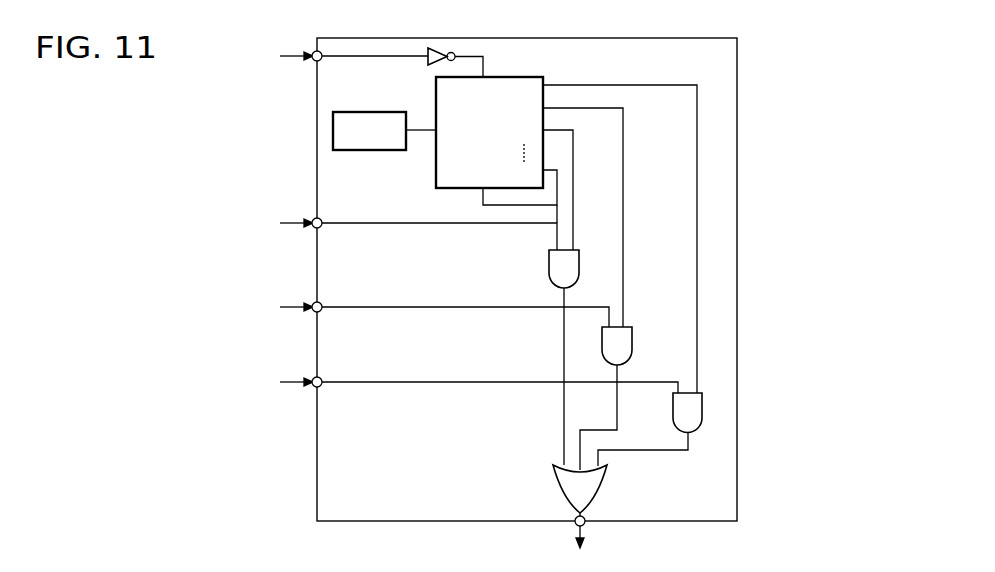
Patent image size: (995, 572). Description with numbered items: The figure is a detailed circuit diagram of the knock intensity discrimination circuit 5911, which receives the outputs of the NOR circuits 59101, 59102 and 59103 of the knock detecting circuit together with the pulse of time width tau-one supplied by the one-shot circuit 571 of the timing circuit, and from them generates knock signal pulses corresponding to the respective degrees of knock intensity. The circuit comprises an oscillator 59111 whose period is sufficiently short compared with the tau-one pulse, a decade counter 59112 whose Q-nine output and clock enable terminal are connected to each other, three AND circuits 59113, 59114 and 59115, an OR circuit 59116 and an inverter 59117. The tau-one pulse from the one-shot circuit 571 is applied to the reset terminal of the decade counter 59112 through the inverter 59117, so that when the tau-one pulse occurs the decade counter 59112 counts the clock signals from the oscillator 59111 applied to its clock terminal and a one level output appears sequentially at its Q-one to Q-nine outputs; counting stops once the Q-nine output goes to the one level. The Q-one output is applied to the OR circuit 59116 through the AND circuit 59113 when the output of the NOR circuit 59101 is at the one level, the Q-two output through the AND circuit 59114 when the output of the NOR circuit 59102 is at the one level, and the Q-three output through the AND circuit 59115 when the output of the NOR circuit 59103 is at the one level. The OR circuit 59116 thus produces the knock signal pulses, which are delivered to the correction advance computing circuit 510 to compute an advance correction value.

The knock intensity discrimination circuit 5911 is at (737, 265).
The one-shot circuit 571 is at (332, 56).
The inverter 59117 is at (428, 61).
The oscillator 59111 is at (382, 150).
The decade counter 59112 is at (436, 186).
The NOR circuit 59101 is at (381, 227).
The NOR circuit 59102 is at (407, 310).
The NOR circuit 59103 is at (441, 381).
The AND circuit 59113 is at (549, 272).
The AND circuit 59114 is at (632, 338).
The AND circuit 59115 is at (702, 430).
The OR circuit 59116 is at (605, 472).
The correction advance computing circuit 510 is at (585, 542).